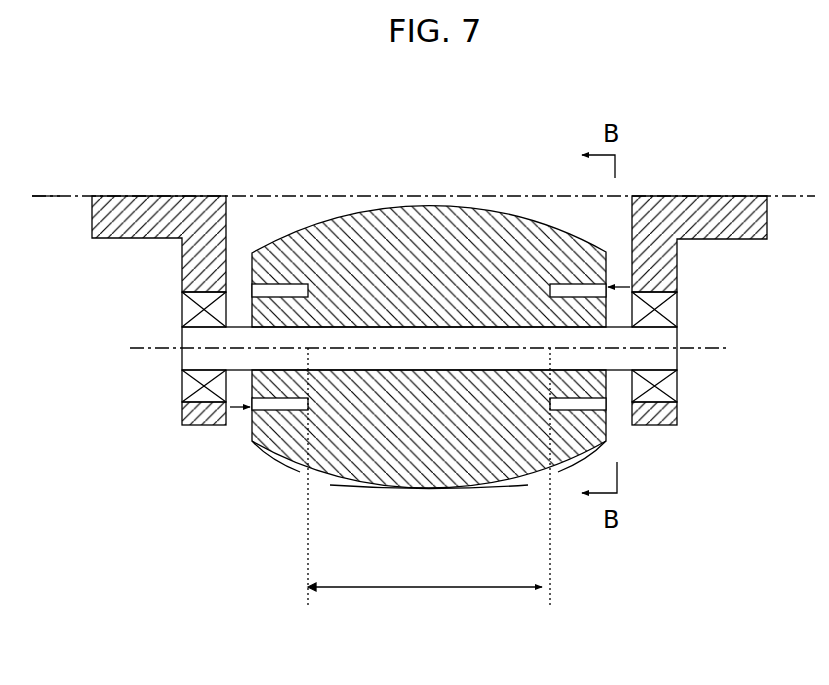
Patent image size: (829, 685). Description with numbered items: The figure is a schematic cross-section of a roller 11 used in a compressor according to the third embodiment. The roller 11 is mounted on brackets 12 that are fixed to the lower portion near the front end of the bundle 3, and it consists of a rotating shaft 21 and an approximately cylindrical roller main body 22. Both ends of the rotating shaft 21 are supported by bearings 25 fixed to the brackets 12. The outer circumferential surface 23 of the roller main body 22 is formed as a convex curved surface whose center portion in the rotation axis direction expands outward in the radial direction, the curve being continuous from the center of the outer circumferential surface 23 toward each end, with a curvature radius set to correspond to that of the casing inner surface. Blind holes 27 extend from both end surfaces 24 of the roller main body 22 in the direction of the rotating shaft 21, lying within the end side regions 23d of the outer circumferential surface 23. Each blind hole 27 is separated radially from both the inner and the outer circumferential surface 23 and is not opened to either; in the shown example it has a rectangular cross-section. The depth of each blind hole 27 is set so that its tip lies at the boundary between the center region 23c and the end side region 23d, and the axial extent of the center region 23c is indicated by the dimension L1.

The bundle 3 is at (47, 200).
The roller 11 is at (268, 232).
The bracket 12 is at (126, 218).
The rotating shaft 21 is at (182, 333).
The roller main body 22 is at (455, 245).
The outer circumferential surface 23 is at (434, 345).
The center region 23c is at (375, 490).
The end side region 23d is at (278, 458).
The end surface 24 is at (250, 272).
The bearing 25 is at (182, 308).
The blind hole 27 is at (630, 287).
The axial length of rotor L1 is at (430, 595).